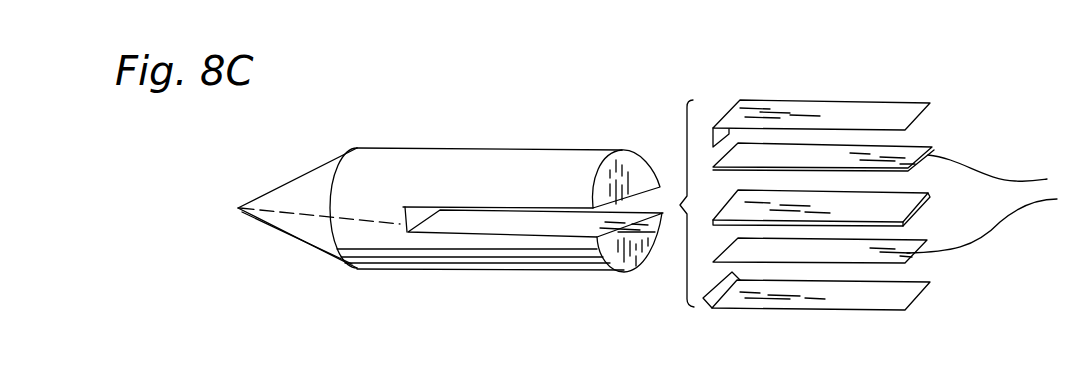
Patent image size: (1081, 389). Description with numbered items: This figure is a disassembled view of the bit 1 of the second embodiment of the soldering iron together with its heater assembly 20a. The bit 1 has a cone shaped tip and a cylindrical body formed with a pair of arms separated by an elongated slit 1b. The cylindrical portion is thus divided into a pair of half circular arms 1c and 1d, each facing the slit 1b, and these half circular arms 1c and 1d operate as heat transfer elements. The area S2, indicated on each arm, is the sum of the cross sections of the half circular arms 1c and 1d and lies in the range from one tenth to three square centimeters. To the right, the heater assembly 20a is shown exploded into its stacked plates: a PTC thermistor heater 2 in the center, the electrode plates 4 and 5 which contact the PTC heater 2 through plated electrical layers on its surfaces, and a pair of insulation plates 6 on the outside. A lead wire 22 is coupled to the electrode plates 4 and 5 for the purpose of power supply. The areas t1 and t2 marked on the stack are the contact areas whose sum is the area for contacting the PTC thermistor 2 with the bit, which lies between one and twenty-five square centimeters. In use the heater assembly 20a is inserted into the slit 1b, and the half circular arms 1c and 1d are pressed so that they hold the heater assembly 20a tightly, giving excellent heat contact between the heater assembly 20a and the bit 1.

The bit 1 is at (430, 166).
The elongated slit 1b is at (562, 223).
The half circular arm 1c is at (630, 172).
The half circular arm 1d is at (648, 248).
The cross-sectional area of half circular arms S2 is at (678, 137).
The heater assembly 20a is at (676, 112).
The insulation plates 6 is at (907, 108).
The electrode plate 4 is at (922, 150).
The PTC thermistor heater 2 is at (917, 209).
The electrode plate 5 is at (913, 260).
The lead wire 22 is at (1030, 203).
The contact area t1 is at (822, 192).
The contact area t2 is at (800, 223).